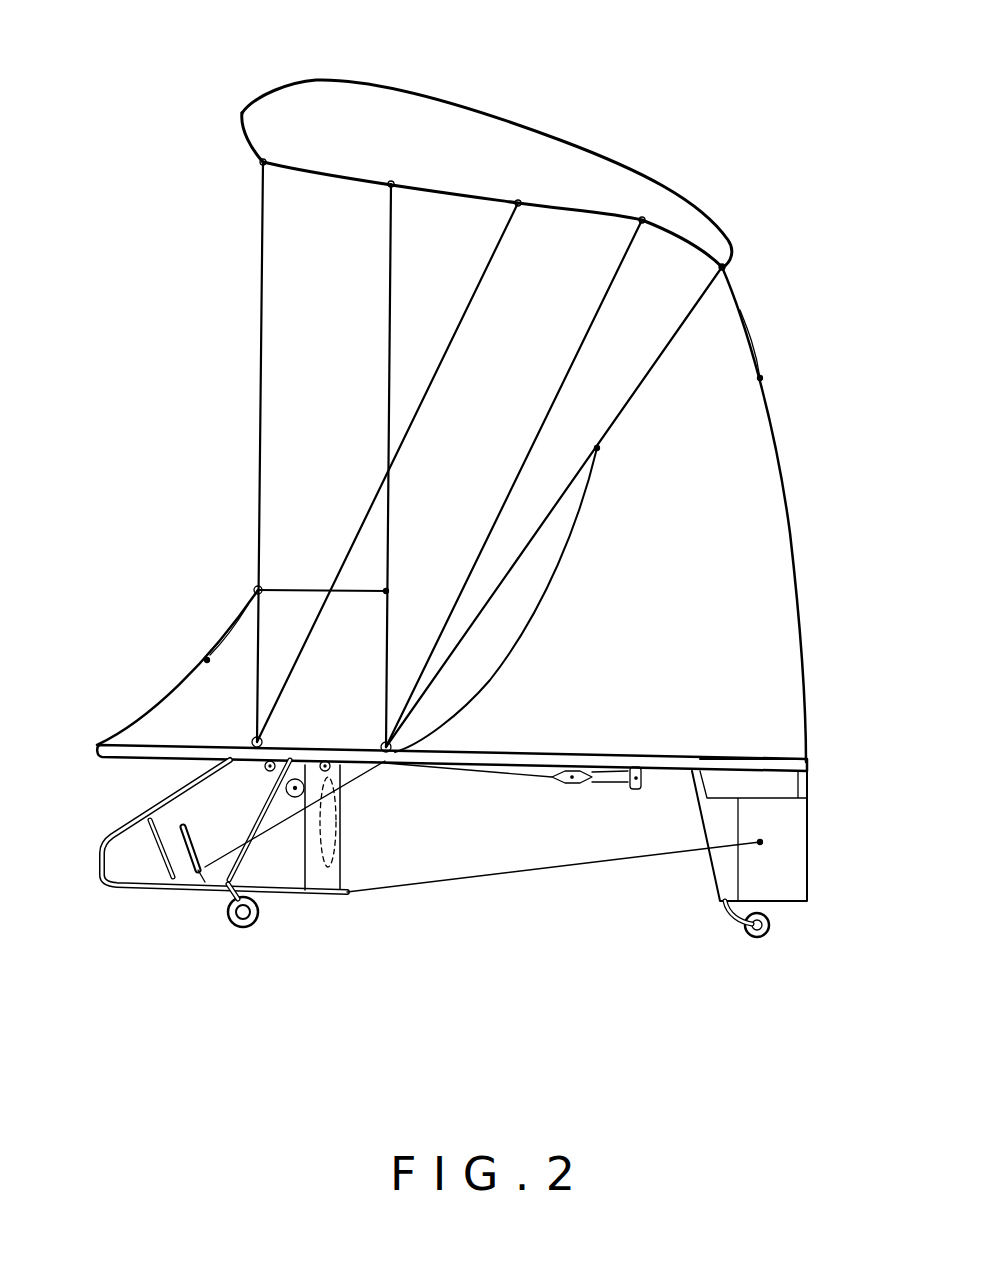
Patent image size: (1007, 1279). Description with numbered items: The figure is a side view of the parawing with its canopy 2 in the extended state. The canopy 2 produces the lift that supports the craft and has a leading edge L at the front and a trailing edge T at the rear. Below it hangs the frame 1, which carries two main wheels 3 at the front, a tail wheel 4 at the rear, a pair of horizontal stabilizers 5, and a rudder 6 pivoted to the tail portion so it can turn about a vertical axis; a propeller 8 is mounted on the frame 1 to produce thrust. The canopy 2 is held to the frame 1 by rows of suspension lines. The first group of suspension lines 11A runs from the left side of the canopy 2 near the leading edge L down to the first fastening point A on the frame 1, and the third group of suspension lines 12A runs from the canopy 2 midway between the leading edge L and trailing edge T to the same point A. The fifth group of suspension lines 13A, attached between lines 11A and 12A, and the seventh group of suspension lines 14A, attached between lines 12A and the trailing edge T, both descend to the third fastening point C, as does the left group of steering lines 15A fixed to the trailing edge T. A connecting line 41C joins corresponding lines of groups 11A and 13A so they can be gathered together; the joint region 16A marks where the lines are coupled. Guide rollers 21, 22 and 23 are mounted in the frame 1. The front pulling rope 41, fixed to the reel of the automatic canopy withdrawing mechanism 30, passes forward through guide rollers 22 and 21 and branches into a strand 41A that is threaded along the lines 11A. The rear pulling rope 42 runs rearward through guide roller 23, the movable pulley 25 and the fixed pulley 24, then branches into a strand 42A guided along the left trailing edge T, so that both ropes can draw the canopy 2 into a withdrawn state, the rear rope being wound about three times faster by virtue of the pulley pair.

The frame 1 is at (175, 793).
The canopy 2 is at (537, 140).
The main wheels 3 is at (230, 925).
The tail wheel 4 is at (770, 940).
The horizontal stabilizers 5 is at (785, 760).
The rudder 6 is at (800, 850).
The propeller 8 is at (337, 855).
The guide roller 21 is at (97, 745).
The guide roller 22 is at (265, 769).
The guide roller 23 is at (337, 770).
The fixed pulley 24 is at (638, 786).
The movable pulley 25 is at (560, 785).
The automatic canopy withdrawing mechanism 30 is at (293, 800).
The front pulling rope 41 is at (170, 690).
The strand 41A is at (237, 620).
The connecting line 41C is at (306, 590).
The rear pulling rope 42 is at (790, 533).
The strand 42A is at (752, 343).
The first group of suspension lines 11A is at (261, 273).
The third group of suspension lines 12A is at (462, 325).
The fifth group of suspension lines 13A is at (388, 290).
The seventh group of suspension lines 14A is at (583, 333).
The left group of steering lines 15A is at (643, 380).
The joint 16A is at (258, 590).
The leading edge L is at (258, 108).
The trailing edge T is at (733, 245).
The first fastening point A is at (267, 742).
The third fastening point C is at (382, 742).